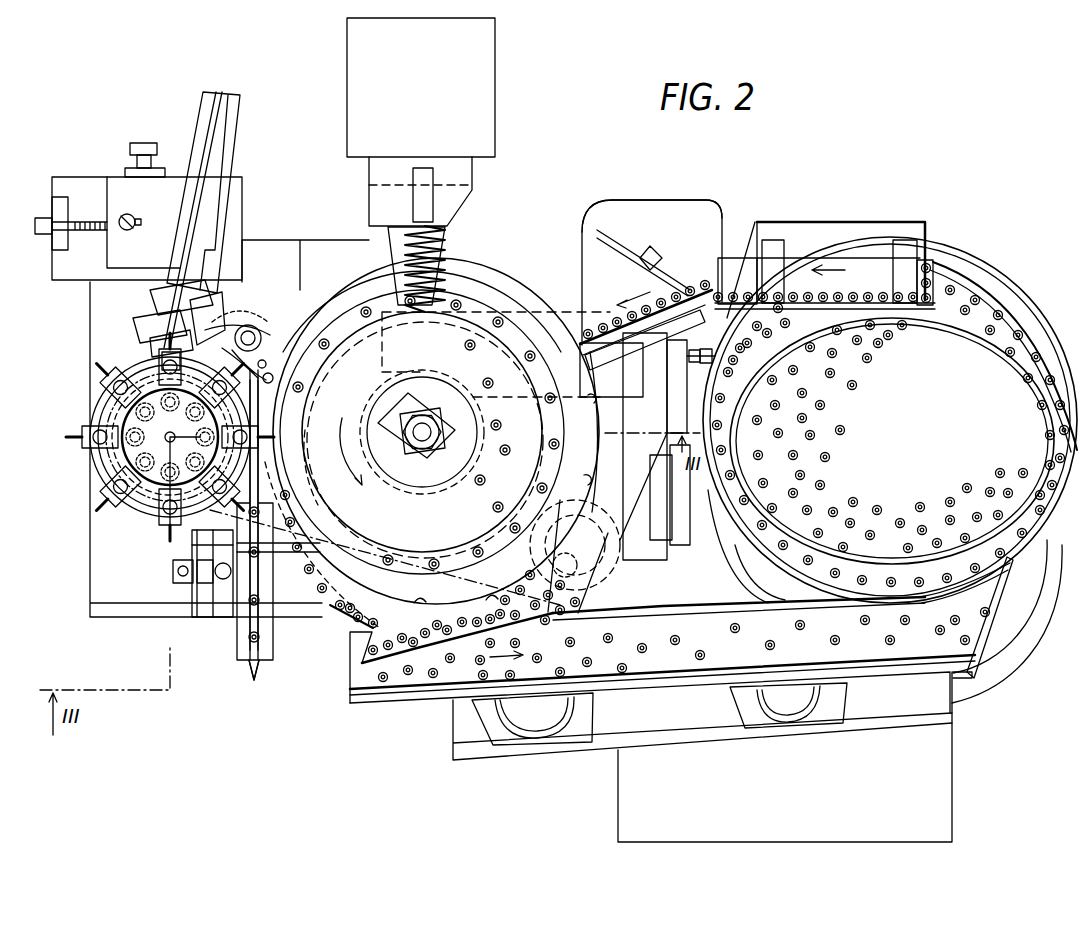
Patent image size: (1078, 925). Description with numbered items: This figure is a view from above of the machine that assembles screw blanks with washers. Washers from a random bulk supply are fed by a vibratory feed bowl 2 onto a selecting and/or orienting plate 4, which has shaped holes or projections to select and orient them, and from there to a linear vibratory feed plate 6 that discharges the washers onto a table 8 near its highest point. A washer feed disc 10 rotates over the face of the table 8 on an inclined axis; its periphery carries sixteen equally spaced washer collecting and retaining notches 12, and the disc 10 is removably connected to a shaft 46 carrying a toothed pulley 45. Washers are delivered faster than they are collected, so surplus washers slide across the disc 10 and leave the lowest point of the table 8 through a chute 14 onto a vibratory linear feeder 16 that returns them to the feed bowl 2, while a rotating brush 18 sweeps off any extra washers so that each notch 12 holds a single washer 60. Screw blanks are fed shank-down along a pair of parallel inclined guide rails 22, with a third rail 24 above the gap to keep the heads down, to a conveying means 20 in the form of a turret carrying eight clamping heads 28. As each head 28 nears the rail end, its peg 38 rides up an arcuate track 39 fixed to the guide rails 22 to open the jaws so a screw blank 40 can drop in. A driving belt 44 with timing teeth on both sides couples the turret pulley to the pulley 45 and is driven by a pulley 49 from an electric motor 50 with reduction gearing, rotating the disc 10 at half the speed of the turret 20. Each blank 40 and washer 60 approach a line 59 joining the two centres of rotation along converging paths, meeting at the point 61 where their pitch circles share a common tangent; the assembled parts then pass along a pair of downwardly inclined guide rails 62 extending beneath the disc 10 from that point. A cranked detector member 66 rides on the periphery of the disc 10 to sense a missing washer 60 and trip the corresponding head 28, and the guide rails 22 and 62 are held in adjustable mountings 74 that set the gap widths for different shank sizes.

The vibratory feed bowl 2 is at (942, 419).
The selecting and/or orienting plate 4 is at (833, 265).
The linear vibratory feed plate 6 is at (675, 235).
The table 8 is at (592, 418).
The washer feed disc 10 is at (332, 300).
The washer collecting and retaining notches 12 is at (578, 366).
The chute 14 is at (362, 663).
The vibratory linear feeder 16 is at (653, 673).
The rotating brush 18 is at (452, 238).
The conveying means (turret) 20 is at (153, 449).
The parallel inclined guide rails 22 is at (201, 104).
The third rail 24 is at (225, 140).
The clamping heads 28 is at (118, 500).
The peg 38 is at (163, 348).
The arcuate track 39 is at (150, 322).
The screw blank 40 is at (250, 638).
The driving belt 44 is at (376, 552).
The toothed pulley 45 is at (401, 423).
The shaft 46 is at (420, 436).
The pulley 49 is at (606, 582).
The electric motor 50 is at (657, 180).
The line 59 is at (311, 434).
The washer 60 is at (278, 380).
The point 61 is at (271, 388).
The guide rails 62 is at (262, 664).
The cranked detector member 66 is at (238, 318).
The mountings 74 is at (104, 163).